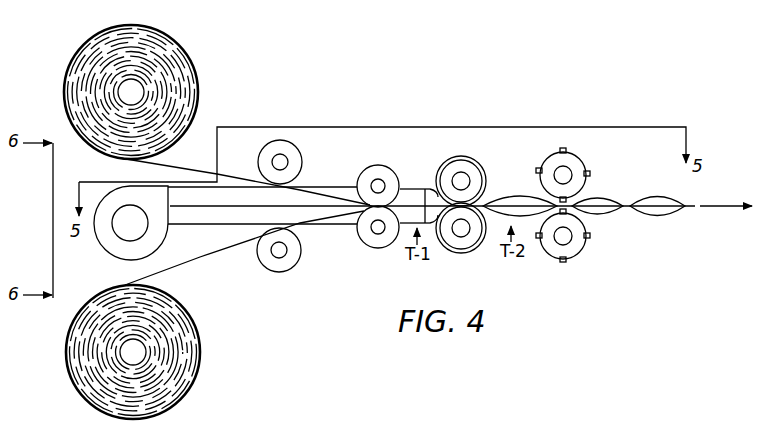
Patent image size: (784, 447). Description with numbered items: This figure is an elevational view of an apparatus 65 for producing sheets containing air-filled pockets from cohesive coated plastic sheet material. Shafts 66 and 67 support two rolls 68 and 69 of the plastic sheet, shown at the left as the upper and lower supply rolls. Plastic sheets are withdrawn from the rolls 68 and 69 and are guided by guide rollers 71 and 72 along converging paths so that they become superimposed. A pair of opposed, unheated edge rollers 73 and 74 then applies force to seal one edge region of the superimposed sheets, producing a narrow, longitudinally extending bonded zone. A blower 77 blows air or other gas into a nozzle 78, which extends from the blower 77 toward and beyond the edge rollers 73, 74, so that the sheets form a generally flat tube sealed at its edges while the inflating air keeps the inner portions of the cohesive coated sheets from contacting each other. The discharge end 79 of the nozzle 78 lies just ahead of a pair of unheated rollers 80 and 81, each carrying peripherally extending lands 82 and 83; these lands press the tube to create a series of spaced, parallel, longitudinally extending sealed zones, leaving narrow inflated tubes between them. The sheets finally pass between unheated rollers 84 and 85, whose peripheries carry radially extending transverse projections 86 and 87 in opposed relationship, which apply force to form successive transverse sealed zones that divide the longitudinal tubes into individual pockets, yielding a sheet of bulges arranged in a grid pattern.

The apparatus 65 is at (371, 125).
The shaft 66 is at (133, 93).
The shaft 67 is at (146, 345).
The roll 68 is at (180, 58).
The roll 69 is at (190, 366).
The guide roller 71 is at (286, 160).
The guide roller 72 is at (280, 269).
The edge roller 73 is at (382, 171).
The edge roller 74 is at (373, 240).
The blower 77 is at (121, 252).
The nozzle 78 is at (212, 226).
The discharge end 79 is at (427, 190).
The roller 80 is at (455, 166).
The roller 81 is at (457, 237).
The land 82 is at (475, 160).
The land 83 is at (478, 242).
The roller 84 is at (578, 163).
The roller 85 is at (584, 242).
The transverse projection 86 is at (542, 166).
The transverse projection 87 is at (541, 242).